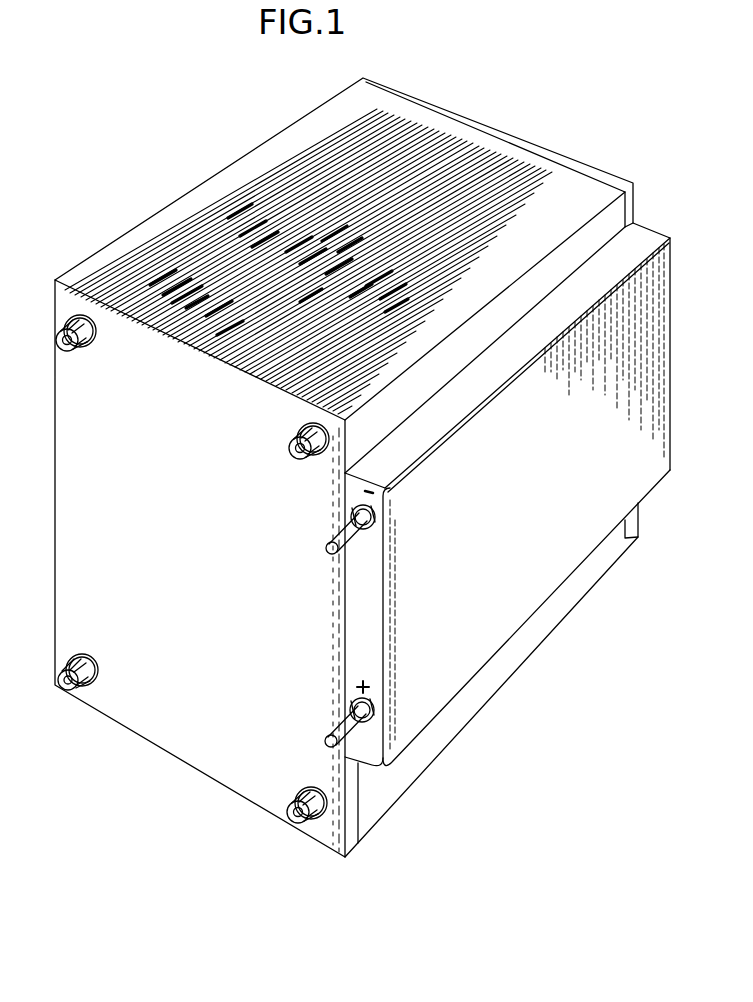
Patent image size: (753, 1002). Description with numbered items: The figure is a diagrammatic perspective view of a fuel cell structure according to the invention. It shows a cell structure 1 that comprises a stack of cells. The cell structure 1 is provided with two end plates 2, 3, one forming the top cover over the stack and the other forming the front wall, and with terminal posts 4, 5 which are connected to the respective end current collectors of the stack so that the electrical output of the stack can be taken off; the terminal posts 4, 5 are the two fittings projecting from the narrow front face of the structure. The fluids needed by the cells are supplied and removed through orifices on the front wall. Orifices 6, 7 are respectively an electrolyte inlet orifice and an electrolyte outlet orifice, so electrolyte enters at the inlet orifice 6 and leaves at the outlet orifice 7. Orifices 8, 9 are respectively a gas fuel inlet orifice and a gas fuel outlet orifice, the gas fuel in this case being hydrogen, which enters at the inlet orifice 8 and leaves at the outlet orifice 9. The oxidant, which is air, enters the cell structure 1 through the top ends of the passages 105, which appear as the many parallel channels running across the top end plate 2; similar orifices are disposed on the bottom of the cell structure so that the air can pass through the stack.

The cell structure 1 is at (220, 168).
The end plate 2 is at (490, 140).
The end plate 3 is at (177, 722).
The terminal post 4 is at (358, 548).
The terminal post 5 is at (360, 768).
The electrolyte inlet orifice 6 is at (62, 340).
The electrolyte outlet orifice 7 is at (288, 852).
The gas fuel inlet orifice 8 is at (296, 458).
The gas fuel outlet orifice 9 is at (62, 692).
The passages 105 is at (187, 288).